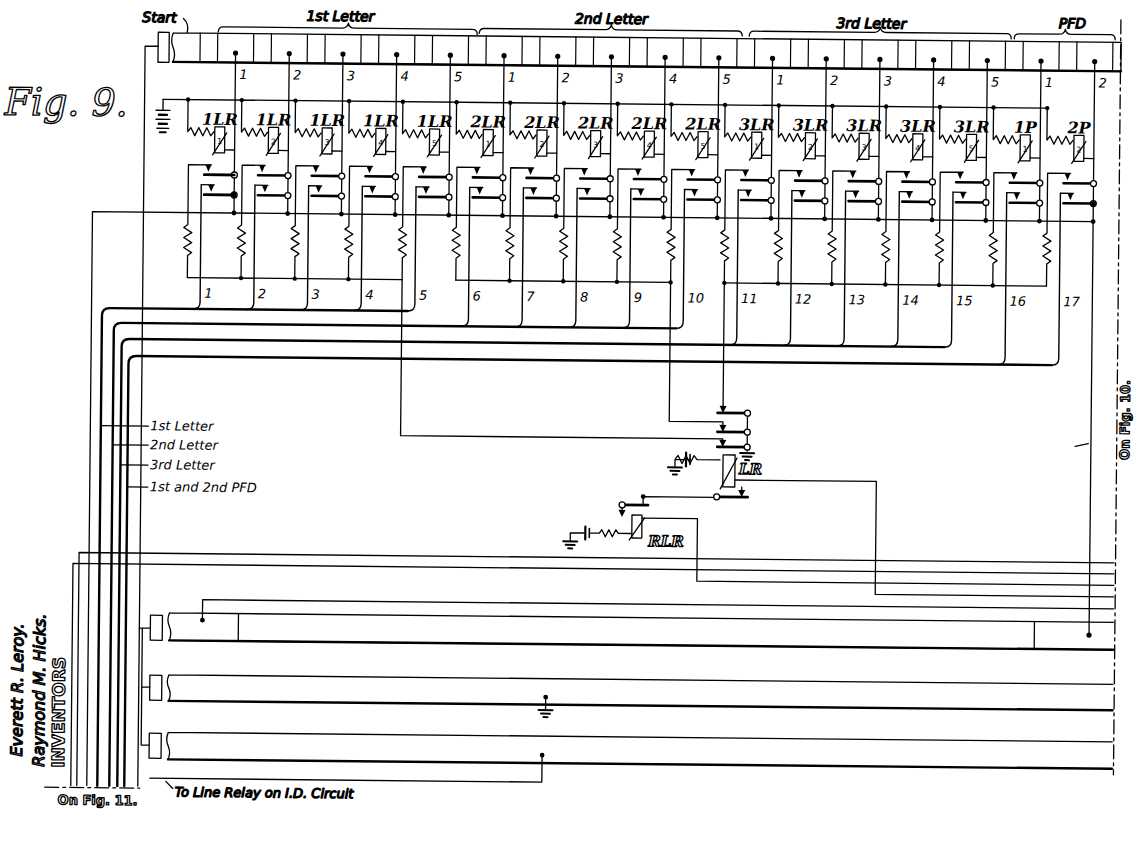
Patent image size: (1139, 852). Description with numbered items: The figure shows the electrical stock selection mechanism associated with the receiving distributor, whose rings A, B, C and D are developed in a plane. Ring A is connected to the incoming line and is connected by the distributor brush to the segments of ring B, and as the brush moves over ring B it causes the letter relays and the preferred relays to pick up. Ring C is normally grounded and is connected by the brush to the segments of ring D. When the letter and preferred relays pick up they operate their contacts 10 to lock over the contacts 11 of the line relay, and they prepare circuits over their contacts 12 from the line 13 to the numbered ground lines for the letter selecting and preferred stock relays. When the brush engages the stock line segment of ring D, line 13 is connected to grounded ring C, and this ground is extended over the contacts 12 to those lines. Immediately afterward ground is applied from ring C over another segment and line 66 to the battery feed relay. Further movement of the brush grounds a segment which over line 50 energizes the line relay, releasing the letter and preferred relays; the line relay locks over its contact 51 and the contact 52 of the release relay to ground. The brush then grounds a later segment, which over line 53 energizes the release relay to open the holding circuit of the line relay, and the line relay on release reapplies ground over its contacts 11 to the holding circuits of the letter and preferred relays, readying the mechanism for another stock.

The contacts 10 is at (214, 178).
The contacts of relay LR 11 is at (740, 410).
The contacts 12 is at (214, 198).
The line 13 is at (122, 212).
The line 50 is at (835, 472).
The contact of relay LR 51 is at (736, 494).
The contact of relay RLR 52 is at (628, 497).
The line 53 is at (703, 532).
The line 66 is at (257, 568).
The ring A is at (218, 733).
The ring B is at (213, 32).
The ring C is at (208, 673).
The ring D is at (194, 609).